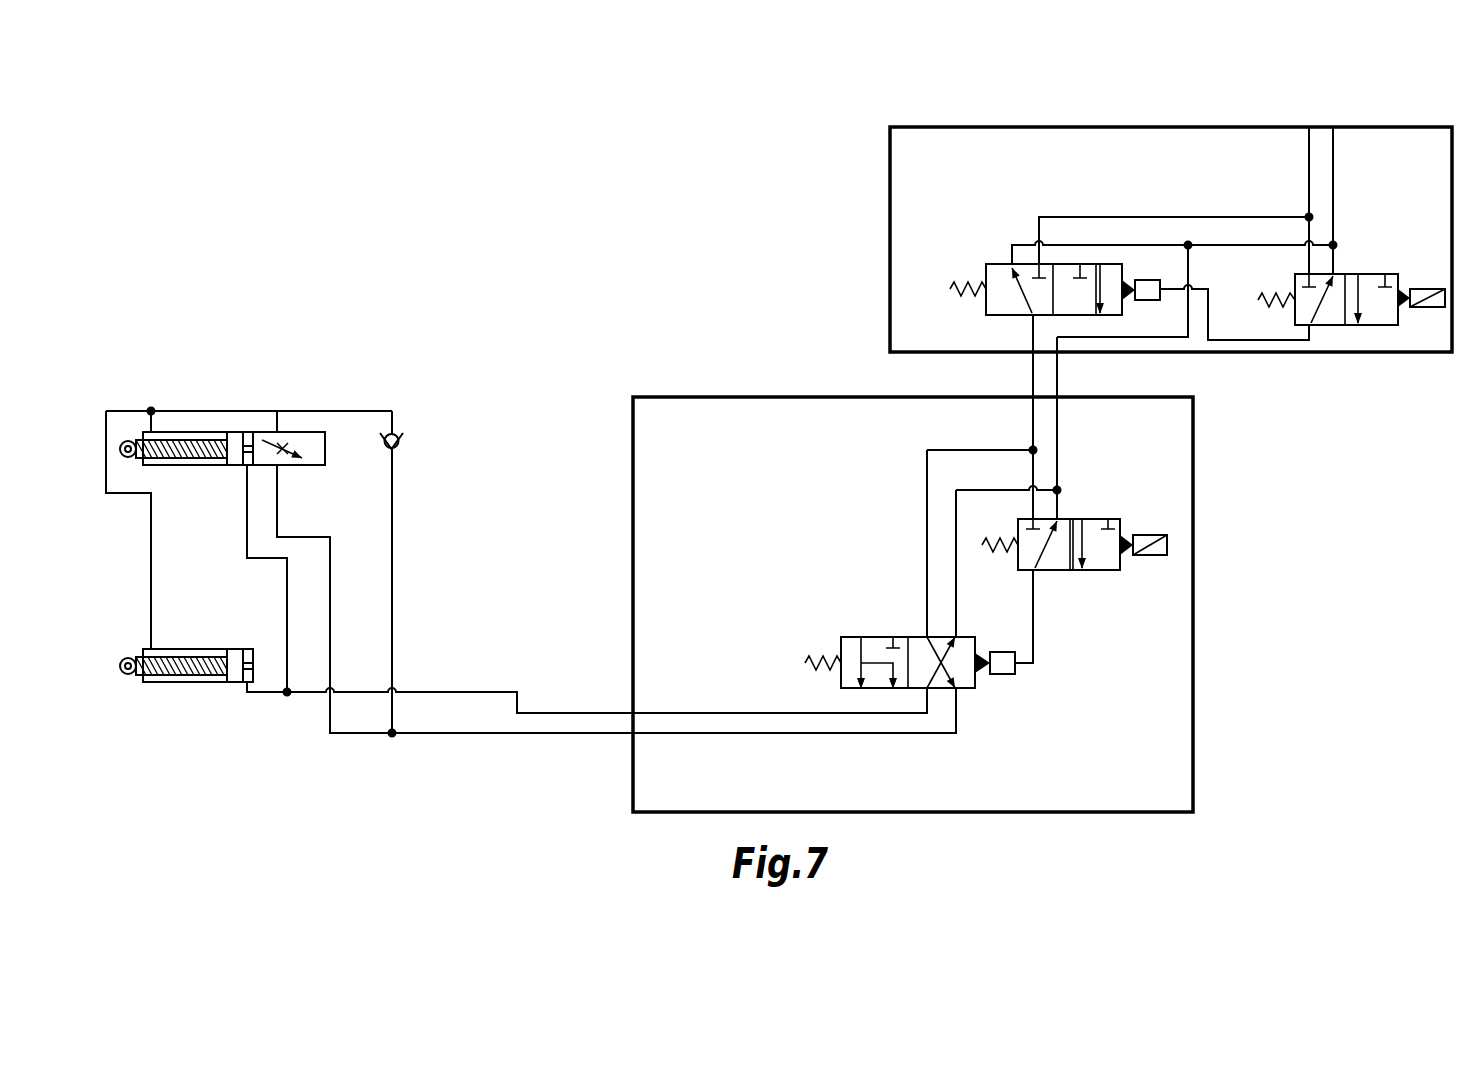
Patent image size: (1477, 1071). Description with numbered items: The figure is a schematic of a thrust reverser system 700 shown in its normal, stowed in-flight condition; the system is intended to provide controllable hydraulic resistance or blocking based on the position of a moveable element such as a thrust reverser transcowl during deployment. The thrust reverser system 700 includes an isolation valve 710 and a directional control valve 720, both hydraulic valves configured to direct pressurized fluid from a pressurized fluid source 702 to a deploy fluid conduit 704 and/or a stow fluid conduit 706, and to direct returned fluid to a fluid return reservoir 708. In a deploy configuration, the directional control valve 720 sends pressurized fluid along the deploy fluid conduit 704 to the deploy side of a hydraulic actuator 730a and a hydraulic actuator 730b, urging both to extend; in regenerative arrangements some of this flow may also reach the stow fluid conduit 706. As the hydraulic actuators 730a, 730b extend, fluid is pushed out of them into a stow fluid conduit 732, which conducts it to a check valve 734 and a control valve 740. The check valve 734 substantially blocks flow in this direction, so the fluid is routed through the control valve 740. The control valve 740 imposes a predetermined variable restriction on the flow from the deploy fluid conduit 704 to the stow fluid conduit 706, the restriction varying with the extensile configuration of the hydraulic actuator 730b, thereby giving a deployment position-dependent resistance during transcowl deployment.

The thrust reverser system 700 is at (258, 325).
The pressurized fluid source 702 is at (1309, 127).
The deploy fluid conduit 704 is at (285, 576).
The stow fluid conduit 706 is at (308, 537).
The fluid return reservoir 708 is at (1333, 127).
The isolation valve 710 is at (940, 159).
The directional control valve 720 is at (693, 464).
The hydraulic actuator 730a is at (184, 684).
The hydraulic actuator 730b is at (200, 466).
The stow fluid conduit 732 is at (197, 411).
The check valve 734 is at (399, 436).
The control valve 740 is at (300, 432).